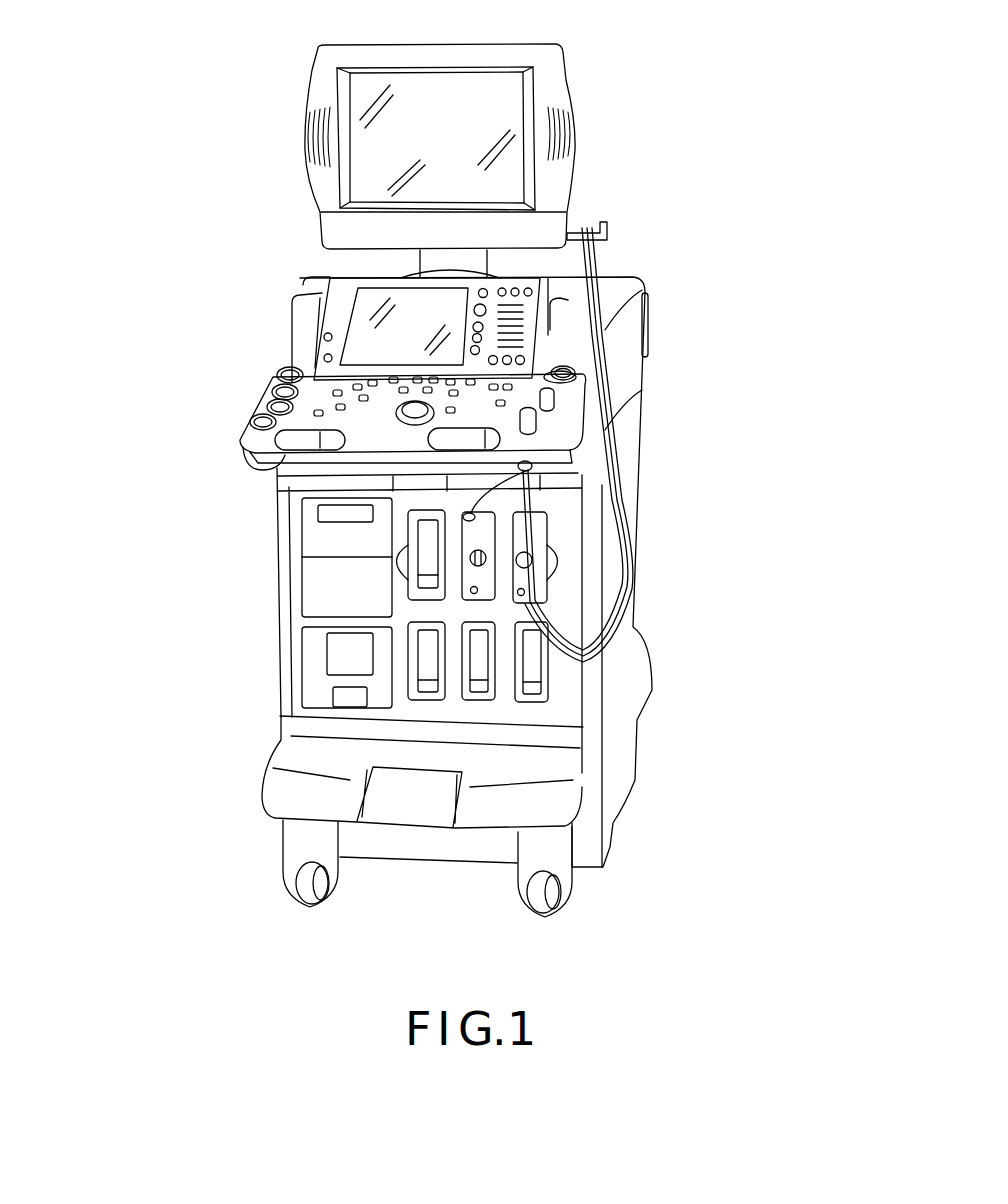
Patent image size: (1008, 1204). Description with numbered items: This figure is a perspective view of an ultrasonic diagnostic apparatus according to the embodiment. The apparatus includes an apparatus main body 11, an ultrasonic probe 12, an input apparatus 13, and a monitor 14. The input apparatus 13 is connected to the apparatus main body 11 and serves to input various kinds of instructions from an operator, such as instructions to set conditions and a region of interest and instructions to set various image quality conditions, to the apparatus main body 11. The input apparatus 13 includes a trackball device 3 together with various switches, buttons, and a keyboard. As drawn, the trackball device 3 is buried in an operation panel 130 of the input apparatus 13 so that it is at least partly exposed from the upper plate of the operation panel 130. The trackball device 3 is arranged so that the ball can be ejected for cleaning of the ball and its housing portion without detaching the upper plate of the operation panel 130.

The monitor 14 is at (563, 80).
The ultrasonic probe 12 is at (572, 377).
The input apparatus 13 is at (322, 389).
The trackball device 3 is at (412, 405).
The operation panel 130 is at (339, 389).
The apparatus main body 11 is at (655, 262).